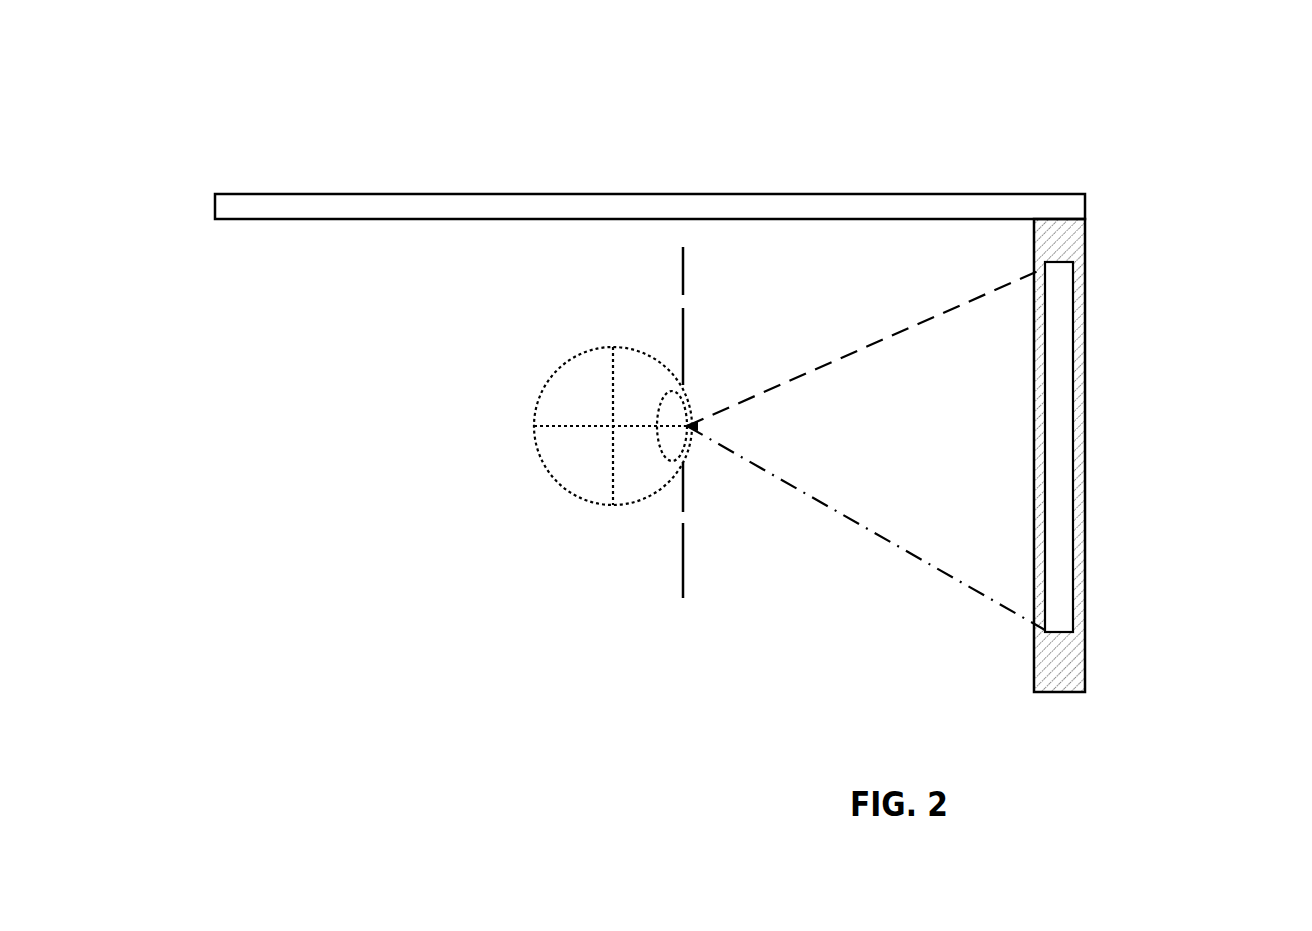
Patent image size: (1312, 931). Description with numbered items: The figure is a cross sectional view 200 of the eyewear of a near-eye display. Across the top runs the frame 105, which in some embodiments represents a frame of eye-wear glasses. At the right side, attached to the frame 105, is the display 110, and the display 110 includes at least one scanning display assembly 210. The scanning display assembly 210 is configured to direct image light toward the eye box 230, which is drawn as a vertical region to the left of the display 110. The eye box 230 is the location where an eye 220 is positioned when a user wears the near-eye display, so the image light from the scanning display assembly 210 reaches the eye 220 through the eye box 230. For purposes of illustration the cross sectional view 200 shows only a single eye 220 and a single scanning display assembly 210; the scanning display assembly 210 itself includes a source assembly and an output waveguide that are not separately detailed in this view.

The cross sectional view 200 is at (350, 94).
The frame 105 is at (879, 194).
The scanning display assembly 210 is at (1058, 448).
The display 110 is at (1085, 575).
The eye 220 is at (536, 426).
The eye box 230 is at (680, 528).